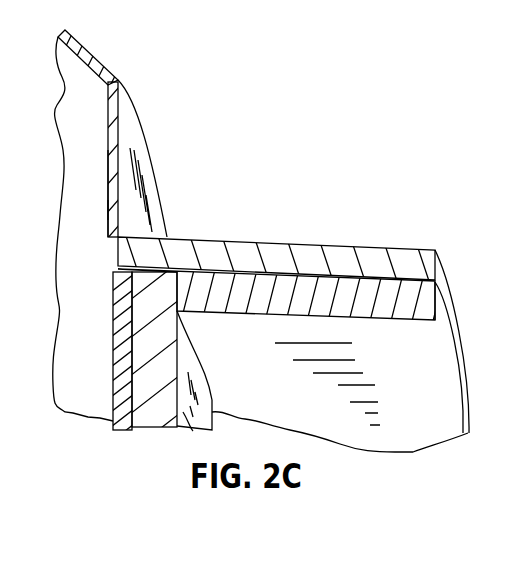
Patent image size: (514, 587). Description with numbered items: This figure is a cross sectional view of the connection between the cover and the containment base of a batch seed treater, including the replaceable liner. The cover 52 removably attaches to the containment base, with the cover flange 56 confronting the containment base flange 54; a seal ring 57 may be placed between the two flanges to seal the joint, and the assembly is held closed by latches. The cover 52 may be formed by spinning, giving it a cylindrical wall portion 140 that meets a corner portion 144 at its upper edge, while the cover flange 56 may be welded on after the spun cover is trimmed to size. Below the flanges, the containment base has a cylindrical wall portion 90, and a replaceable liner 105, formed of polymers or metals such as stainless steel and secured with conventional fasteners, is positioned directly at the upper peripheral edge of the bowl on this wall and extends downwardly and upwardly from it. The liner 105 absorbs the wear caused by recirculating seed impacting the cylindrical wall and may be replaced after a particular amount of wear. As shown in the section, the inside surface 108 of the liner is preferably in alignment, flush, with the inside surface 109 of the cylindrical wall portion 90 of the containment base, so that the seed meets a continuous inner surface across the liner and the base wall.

The corner portion 144 is at (112, 134).
The cover 52 is at (135, 138).
The cylindrical wall portion 140 is at (110, 183).
The inside surface 108 is at (110, 223).
The inside surface 109 is at (110, 348).
The replaceable liner 105 is at (113, 383).
The cylindrical wall portion 90 is at (187, 433).
The seal ring 57 is at (167, 238).
The cover flange 56 is at (332, 245).
The containment base flange 54 is at (427, 387).